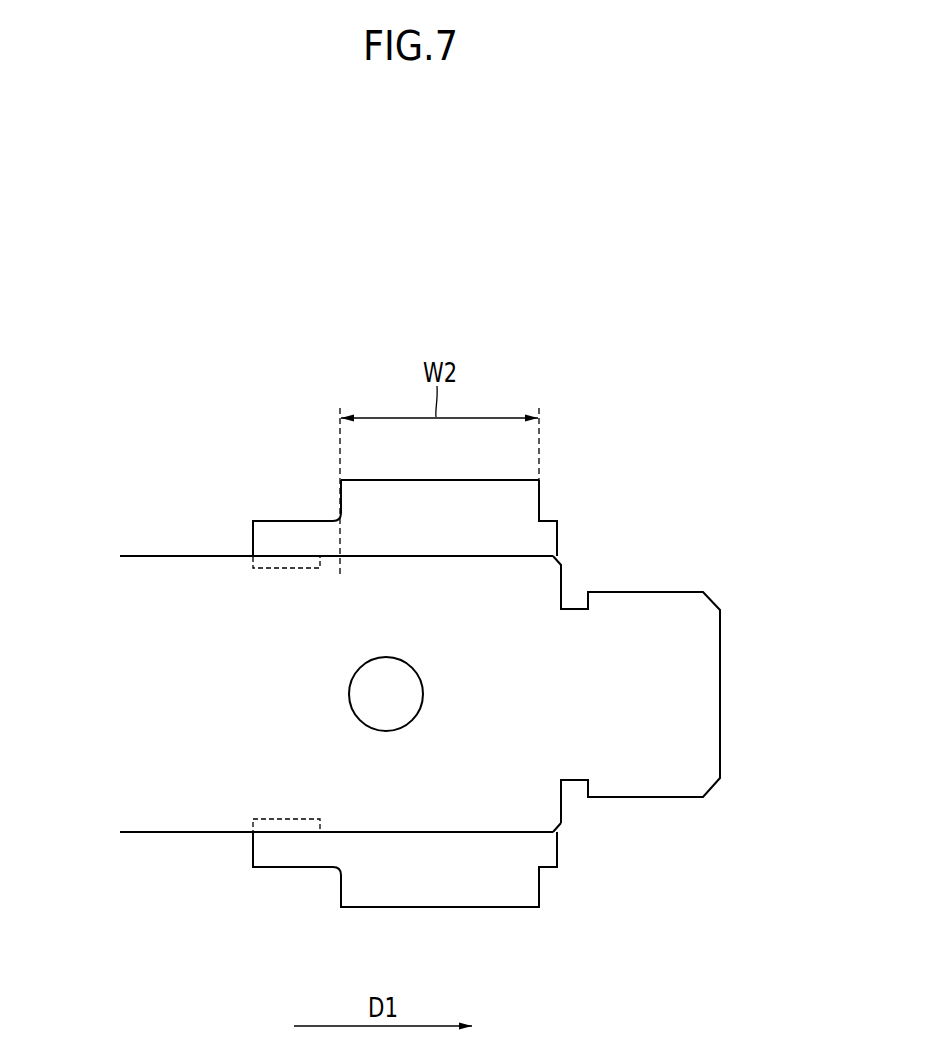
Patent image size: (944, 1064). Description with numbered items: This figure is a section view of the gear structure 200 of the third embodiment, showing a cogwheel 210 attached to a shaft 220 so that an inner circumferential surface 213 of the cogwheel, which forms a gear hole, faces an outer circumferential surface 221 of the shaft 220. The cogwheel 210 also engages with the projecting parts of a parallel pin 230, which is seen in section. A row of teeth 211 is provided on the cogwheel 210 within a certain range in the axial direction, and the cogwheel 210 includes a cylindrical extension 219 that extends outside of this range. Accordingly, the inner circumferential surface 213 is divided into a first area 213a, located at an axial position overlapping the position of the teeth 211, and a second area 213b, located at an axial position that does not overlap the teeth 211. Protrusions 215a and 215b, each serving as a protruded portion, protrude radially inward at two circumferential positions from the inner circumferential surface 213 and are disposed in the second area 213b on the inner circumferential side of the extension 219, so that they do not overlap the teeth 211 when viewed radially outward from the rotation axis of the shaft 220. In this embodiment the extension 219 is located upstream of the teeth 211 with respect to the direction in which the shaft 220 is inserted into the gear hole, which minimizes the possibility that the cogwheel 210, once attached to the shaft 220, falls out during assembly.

The gear structure 200 is at (242, 427).
The cogwheel 210 is at (562, 520).
The teeth 211 is at (493, 479).
The inner circumferential surface 213 is at (528, 557).
The first area 213a is at (467, 558).
The second area 213b is at (304, 560).
The protrusion 215a is at (263, 818).
The protrusion 215b is at (272, 570).
The cylindrical extension 219 is at (297, 538).
The shaft 220 is at (711, 591).
The outer circumferential surface 221 is at (509, 833).
The parallel pin 230 is at (347, 690).